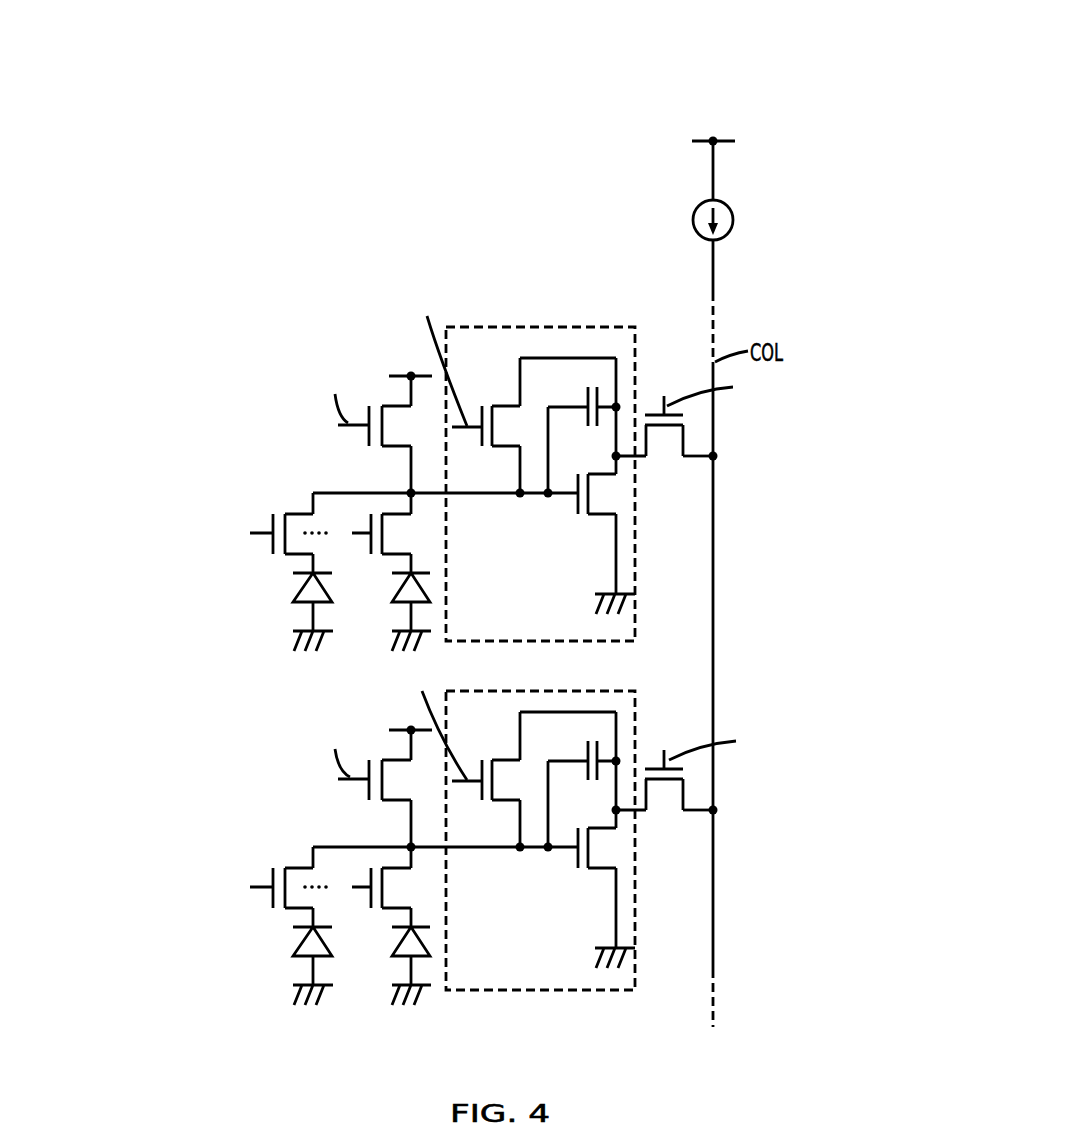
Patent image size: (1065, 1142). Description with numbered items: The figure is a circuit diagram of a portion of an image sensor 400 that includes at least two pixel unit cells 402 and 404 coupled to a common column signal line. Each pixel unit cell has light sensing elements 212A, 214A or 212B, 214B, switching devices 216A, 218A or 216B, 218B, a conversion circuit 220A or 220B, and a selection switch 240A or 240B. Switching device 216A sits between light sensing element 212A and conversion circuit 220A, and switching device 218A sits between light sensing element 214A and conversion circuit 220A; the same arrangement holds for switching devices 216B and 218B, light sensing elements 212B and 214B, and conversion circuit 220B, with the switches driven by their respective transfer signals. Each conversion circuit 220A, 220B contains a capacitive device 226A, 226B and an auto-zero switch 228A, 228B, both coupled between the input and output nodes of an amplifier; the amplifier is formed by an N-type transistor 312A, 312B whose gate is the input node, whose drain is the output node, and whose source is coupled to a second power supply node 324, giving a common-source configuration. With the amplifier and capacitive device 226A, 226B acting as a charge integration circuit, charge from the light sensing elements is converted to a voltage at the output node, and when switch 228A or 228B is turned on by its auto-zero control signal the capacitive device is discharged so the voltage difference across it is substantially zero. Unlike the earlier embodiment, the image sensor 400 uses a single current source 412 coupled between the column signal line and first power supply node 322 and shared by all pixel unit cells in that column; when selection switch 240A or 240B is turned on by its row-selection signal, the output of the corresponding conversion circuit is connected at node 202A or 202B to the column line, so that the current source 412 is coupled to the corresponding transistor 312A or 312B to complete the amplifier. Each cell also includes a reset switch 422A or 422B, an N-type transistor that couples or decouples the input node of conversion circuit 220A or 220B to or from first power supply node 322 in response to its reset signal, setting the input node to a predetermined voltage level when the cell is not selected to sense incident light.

The image sensor 400 is at (858, 70).
The first power supply node 322 is at (727, 138).
The current source 412 is at (730, 208).
The pixel unit cell 402 is at (122, 491).
The pixel unit cell 404 is at (122, 903).
The switch 422A is at (377, 458).
The switch 422B is at (387, 803).
The switching device 216A is at (292, 556).
The switching device 216B is at (290, 910).
The switching device 218A is at (392, 558).
The switching device 218B is at (400, 910).
The light sensing element 212A is at (300, 593).
The light sensing element 212B is at (300, 947).
The light sensing element 214A is at (393, 593).
The light sensing element 214B is at (397, 947).
The conversion circuit 220A is at (577, 645).
The conversion circuit 220B is at (518, 992).
The switch 228A is at (507, 407).
The switch 228B is at (507, 761).
The capacitive device 226A is at (587, 404).
The capacitive device 226B is at (587, 758).
The N-type transistor 312A is at (600, 527).
The N-type transistor 312B is at (600, 882).
The selection switch 240A is at (663, 452).
The selection switch 240B is at (663, 810).
The column output node A 202A is at (715, 457).
The column output node B 202B is at (715, 811).
The second power supply node 324 is at (633, 597).